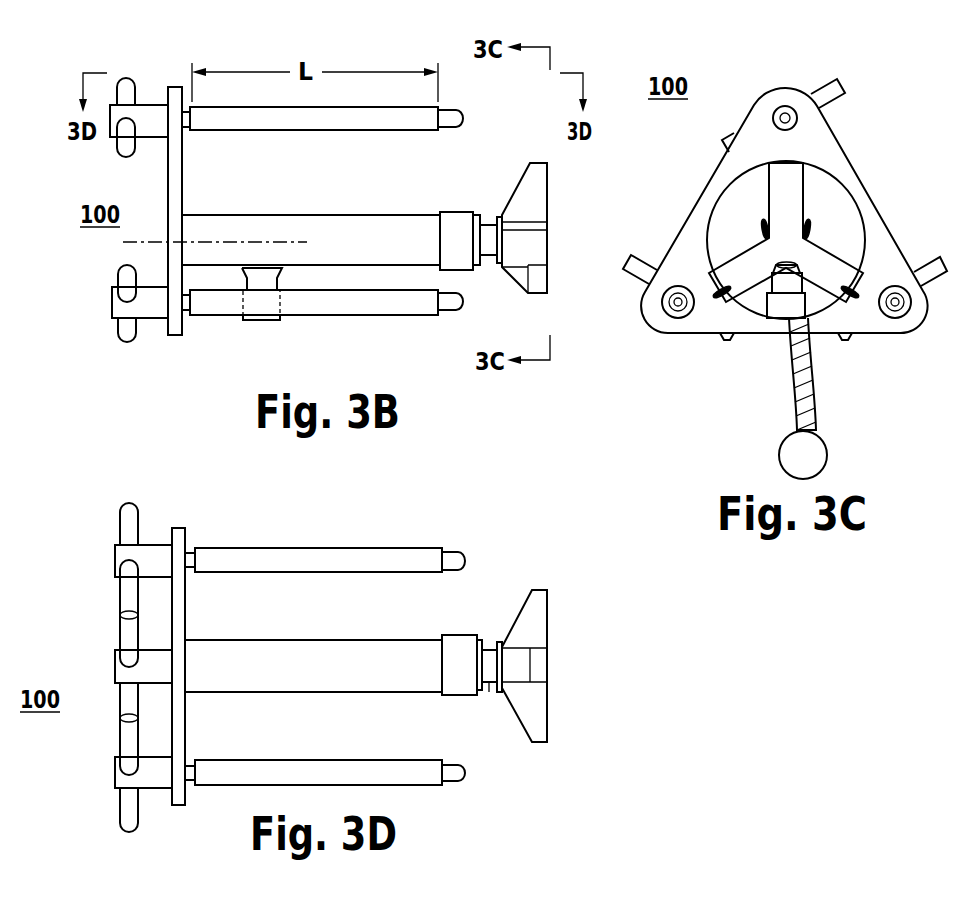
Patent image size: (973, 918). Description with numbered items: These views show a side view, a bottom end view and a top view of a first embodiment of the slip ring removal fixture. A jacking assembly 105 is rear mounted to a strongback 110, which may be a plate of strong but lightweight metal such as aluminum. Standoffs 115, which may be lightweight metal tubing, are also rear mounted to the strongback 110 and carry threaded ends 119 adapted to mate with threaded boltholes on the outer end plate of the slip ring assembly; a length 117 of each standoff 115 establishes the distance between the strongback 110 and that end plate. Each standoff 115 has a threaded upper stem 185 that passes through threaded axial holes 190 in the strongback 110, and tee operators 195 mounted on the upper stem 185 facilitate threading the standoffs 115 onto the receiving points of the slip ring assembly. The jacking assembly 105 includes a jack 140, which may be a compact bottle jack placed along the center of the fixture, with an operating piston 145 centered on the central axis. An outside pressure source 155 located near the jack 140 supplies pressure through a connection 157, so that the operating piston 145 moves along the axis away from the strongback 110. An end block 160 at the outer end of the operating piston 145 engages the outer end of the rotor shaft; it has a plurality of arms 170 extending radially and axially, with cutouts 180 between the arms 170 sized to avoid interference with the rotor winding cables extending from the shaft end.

In FIG. 3B, the jacking assembly 105 is at (376, 203).
In FIG. 3D, the jacking assembly 105 is at (346, 633).
In FIG. 3B, the strongback 110 is at (177, 87).
In FIG. 3C, the strongback 110 is at (717, 166).
In FIG. 3D, the strongback 110 is at (176, 528).
In FIG. 3B, the standoffs 115 is at (342, 130).
In FIG. 3C, the standoffs 115 is at (790, 108).
In FIG. 3D, the standoffs 115 is at (322, 548).
In FIG. 3B, the length of the standoff 117 is at (318, 66).
In FIG. 3C, the threaded ends 119 is at (778, 114).
In FIG. 3D, the threaded ends 119 is at (450, 552).
In FIG. 3B, the jack 140 is at (322, 214).
In FIG. 3D, the jack 140 is at (228, 640).
In FIG. 3D, the operating piston 145 is at (489, 684).
In FIG. 3C, the outside pressure source 155 is at (827, 460).
In FIG. 3B, the connection 157 is at (250, 320).
In FIG. 3C, the connection 157 is at (768, 312).
In FIG. 3D, the end block 160 is at (559, 627).
In FIG. 3C, the arms 170 is at (806, 180).
In FIG. 3D, the arms 170 is at (533, 613).
In FIG. 3C, the cutouts 180 is at (828, 203).
In FIG. 3B, the threaded upper stem 185 is at (17, 292).
In FIG. 3B, the threaded axial holes 190 is at (187, 128).
In FIG. 3D, the threaded axial holes 190 is at (190, 553).
In FIG. 3B, the tee operators 195 is at (146, 137).
In FIG. 3C, the tee operators 195 is at (846, 90).
In FIG. 3D, the tee operators 195 is at (115, 565).